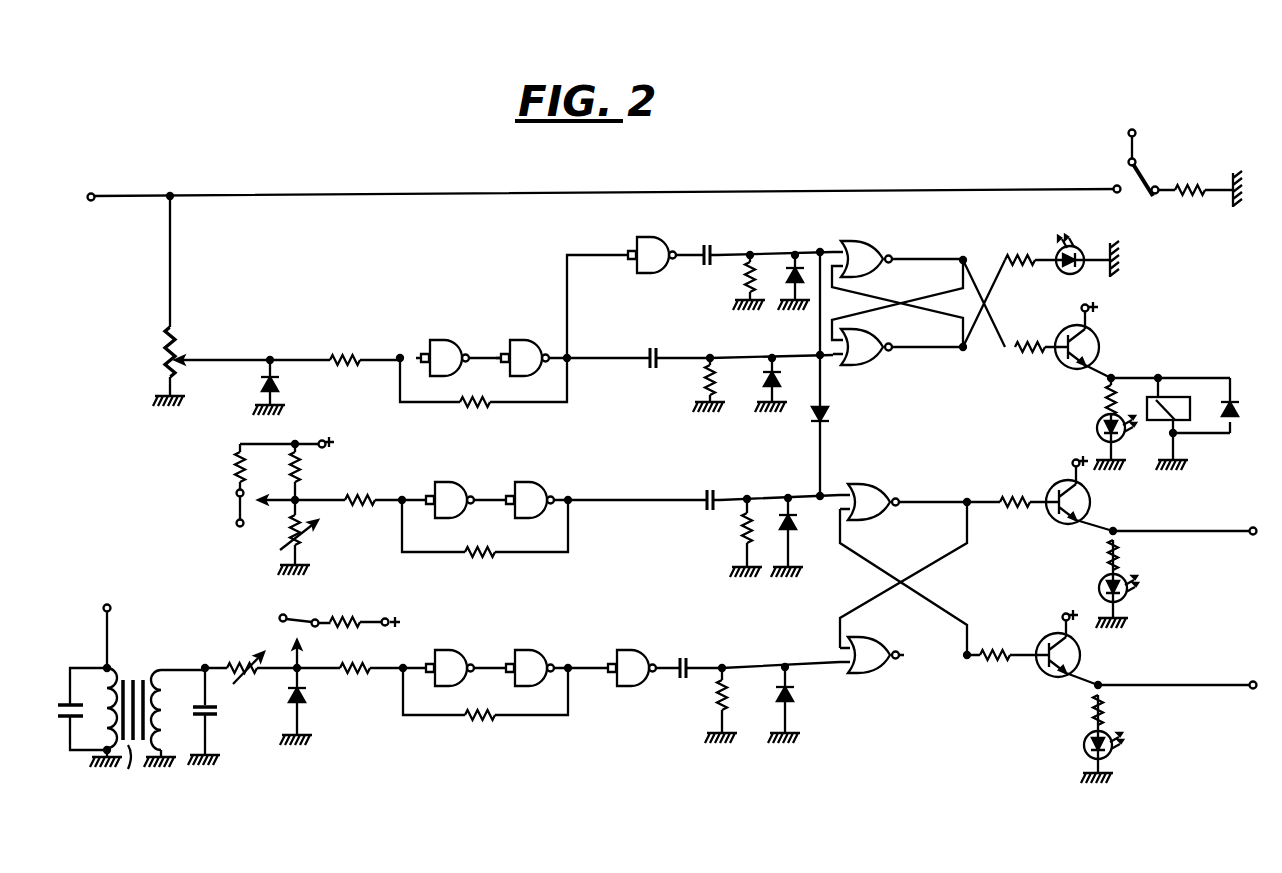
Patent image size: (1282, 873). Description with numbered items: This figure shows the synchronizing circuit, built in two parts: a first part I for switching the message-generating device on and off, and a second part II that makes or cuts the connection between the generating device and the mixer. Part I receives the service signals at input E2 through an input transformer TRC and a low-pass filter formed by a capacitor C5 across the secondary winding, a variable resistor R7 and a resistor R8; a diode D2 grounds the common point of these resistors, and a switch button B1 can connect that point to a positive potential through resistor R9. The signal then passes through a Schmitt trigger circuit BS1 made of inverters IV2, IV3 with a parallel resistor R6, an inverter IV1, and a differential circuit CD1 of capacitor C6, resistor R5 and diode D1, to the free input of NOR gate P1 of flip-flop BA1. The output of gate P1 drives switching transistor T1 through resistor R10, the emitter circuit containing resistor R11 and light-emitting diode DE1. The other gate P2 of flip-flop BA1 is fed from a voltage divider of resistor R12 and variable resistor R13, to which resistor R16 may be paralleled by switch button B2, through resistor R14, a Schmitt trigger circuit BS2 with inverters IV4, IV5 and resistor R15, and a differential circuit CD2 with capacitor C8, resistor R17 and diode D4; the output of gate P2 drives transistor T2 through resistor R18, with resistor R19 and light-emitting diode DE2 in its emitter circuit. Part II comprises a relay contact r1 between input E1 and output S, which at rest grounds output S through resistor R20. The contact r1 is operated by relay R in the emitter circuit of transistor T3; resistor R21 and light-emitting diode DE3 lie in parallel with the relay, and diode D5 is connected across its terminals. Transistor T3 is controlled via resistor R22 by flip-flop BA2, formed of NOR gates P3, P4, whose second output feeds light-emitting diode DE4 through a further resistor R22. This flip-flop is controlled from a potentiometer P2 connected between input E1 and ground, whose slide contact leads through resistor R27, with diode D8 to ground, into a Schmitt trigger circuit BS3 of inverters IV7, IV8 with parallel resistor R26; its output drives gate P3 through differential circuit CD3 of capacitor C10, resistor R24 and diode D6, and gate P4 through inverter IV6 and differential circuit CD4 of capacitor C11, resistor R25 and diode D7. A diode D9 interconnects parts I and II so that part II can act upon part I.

The input E1 is at (98, 184).
The NOR gate P2 is at (185, 352).
The diode D8 is at (300, 394).
The resistor R27 is at (363, 355).
The inverter IV7 is at (452, 334).
The inverter IV8 is at (543, 334).
The resistor R26 is at (484, 406).
The Schmitt trigger circuit BS3 is at (470, 324).
The inverter IV6 is at (662, 240).
The capacitor C11 is at (710, 267).
The resistor R25 is at (745, 282).
The diode D7 is at (788, 264).
The differential circuit CD4 is at (772, 224).
The capacitor C10 is at (660, 368).
The resistor R24 is at (702, 386).
The diode D6 is at (766, 398).
The differential circuit CD3 is at (748, 340).
The diode D9 is at (852, 424).
The NOR gate P4 is at (877, 260).
The NOR gate P3 is at (881, 342).
The flip-flop BA2 is at (938, 260).
The resistor R22 is at (1017, 258).
The light-emitting diode DE4 is at (1082, 246).
The output S is at (1136, 129).
The relay contact r1 is at (1144, 174).
The resistor R20 is at (1202, 200).
The transistor T3 is at (1102, 342).
The resistor R21 is at (1106, 392).
The light-emitting diode DE3 is at (1094, 432).
The relay R is at (1166, 409).
The diode D5 is at (1234, 414).
The second part II is at (186, 460).
The resistor R16 is at (233, 482).
The switching button B2 is at (230, 513).
The resistor R12 is at (318, 478).
The variable resistor R13 is at (290, 538).
The resistor R14 is at (368, 510).
The inverter IV4 is at (452, 490).
The inverter IV5 is at (534, 484).
The resistor R15 is at (491, 556).
The Schmitt trigger circuit BS2 is at (496, 476).
The capacitor C8 is at (706, 506).
The resistor R17 is at (740, 534).
The diode D4 is at (804, 534).
The differential circuit CD2 is at (743, 474).
The NOR gate P1 is at (876, 646).
The flip-flop BA1 is at (972, 588).
The resistor R18 is at (1020, 490).
The switching transistor T2 is at (1092, 508).
The resistor R19 is at (1103, 544).
The light-emitting diode DE2 is at (1098, 584).
The service signal receiving input E2 is at (122, 592).
The input transformer TRC is at (135, 738).
The capacitor C5 is at (230, 714).
The variable resistor R7 is at (232, 669).
The diode D2 is at (300, 694).
The resistor R8 is at (354, 664).
The switch button B1 is at (286, 614).
The resistor R9 is at (366, 614).
The inverter IV2 is at (462, 654).
The inverter IV3 is at (534, 654).
The resistor R6 is at (478, 722).
The Schmitt trigger circuit BS1 is at (522, 622).
The inverter IV1 is at (632, 694).
The capacitor C6 is at (690, 656).
The resistor R5 is at (720, 692).
The diode D1 is at (798, 698).
The differential circuit CD1 is at (790, 640).
The resistor R10 is at (996, 666).
The switching transistor T1 is at (1080, 672).
The resistor R11 is at (1088, 702).
The light-emitting diode DE1 is at (1082, 744).
The first part I is at (384, 770).